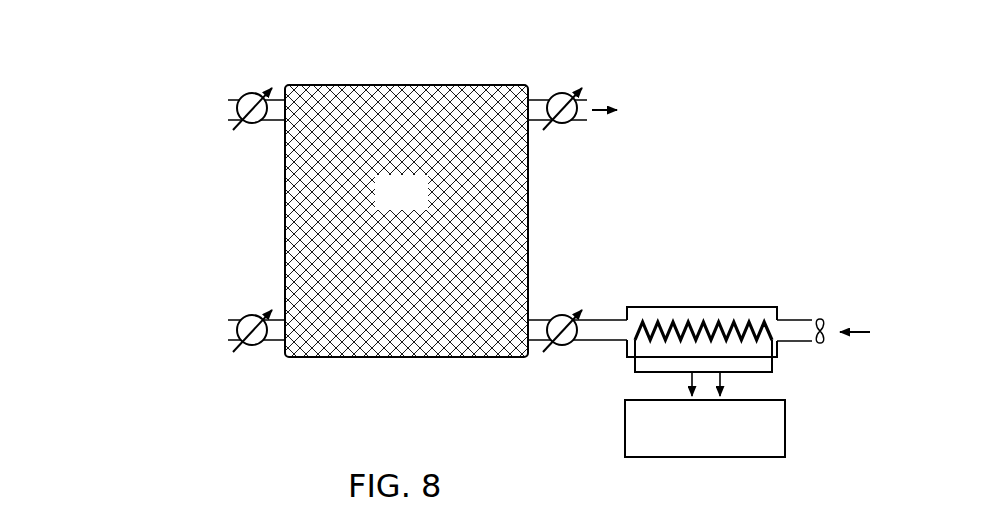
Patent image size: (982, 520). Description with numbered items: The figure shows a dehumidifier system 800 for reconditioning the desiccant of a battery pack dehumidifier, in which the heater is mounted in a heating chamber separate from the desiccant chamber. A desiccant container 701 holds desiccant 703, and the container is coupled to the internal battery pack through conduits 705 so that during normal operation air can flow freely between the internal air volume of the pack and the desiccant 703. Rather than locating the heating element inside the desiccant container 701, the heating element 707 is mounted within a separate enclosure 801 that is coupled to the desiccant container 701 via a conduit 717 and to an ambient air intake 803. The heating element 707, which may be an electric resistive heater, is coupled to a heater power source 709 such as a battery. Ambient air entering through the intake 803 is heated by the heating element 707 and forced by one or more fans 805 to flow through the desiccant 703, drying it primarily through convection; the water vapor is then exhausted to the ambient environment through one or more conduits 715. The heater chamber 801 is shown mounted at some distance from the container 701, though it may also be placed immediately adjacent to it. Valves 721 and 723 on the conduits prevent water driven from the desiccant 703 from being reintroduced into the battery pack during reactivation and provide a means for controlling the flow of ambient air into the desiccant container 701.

The dehumidifier system 800 is at (146, 218).
The desiccant container 701 is at (378, 85).
The desiccant 703 is at (422, 202).
The conduits 705 is at (279, 124).
The valves 721 is at (254, 93).
The conduits 715 is at (536, 97).
The conduit 717 is at (535, 318).
The valves 723 is at (560, 124).
The heater chamber 801 is at (648, 307).
The heating element 707 is at (689, 316).
The ambient air intake 803 is at (794, 320).
The fan 805 is at (820, 343).
The heater power source 709 is at (786, 443).